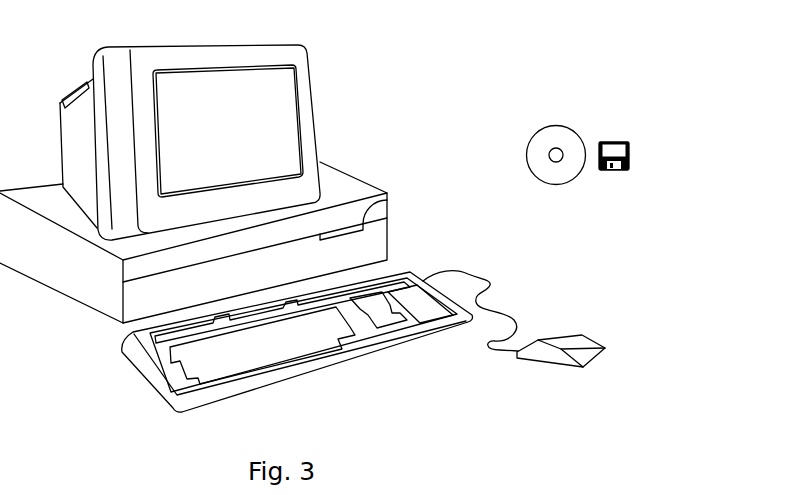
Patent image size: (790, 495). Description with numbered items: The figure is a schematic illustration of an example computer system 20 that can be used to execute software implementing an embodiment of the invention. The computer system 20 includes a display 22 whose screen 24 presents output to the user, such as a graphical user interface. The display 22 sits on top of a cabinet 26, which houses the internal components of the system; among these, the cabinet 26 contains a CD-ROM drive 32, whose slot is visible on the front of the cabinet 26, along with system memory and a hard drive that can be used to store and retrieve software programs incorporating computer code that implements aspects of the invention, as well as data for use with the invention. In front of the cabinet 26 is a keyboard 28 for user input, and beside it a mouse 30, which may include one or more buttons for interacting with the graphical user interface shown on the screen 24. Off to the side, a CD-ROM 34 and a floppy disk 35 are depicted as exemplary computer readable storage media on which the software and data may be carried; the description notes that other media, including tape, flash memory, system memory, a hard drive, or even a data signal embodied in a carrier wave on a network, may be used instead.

The computer system 20 is at (490, 26).
The display 22 is at (318, 140).
The screen 24 is at (285, 90).
The cabinet 26 is at (87, 312).
The keyboard 28 is at (303, 373).
The mouse 30 is at (588, 341).
The CD-ROM drive 32 is at (384, 204).
The CD-ROM 34 is at (556, 124).
The floppy disk 35 is at (616, 137).